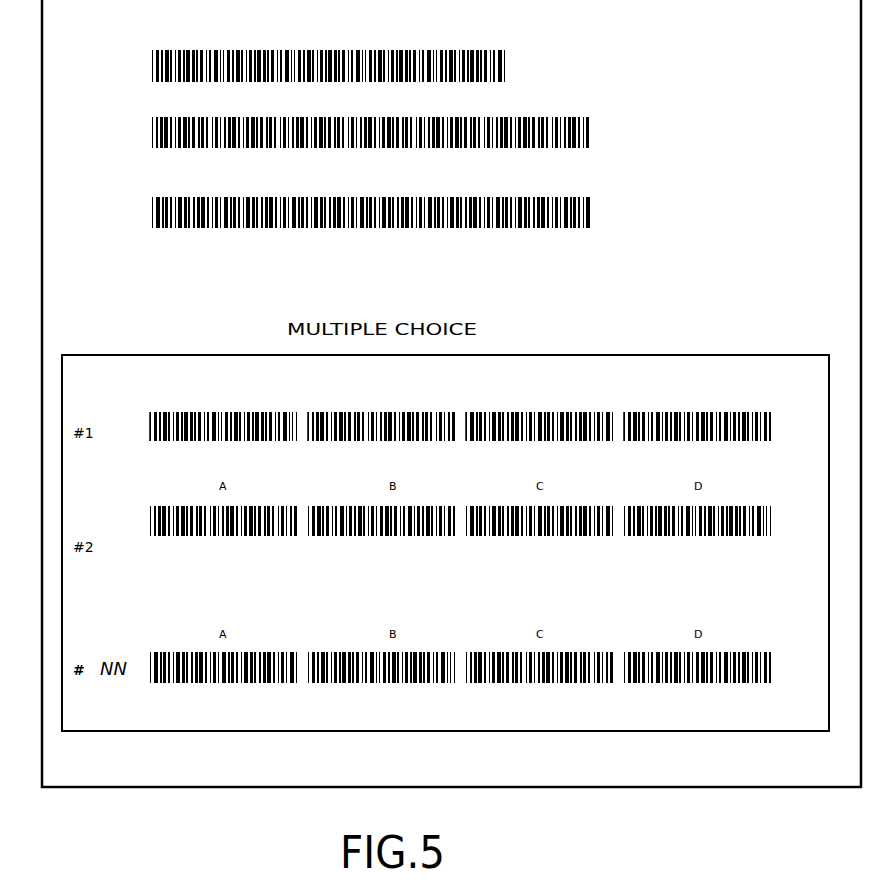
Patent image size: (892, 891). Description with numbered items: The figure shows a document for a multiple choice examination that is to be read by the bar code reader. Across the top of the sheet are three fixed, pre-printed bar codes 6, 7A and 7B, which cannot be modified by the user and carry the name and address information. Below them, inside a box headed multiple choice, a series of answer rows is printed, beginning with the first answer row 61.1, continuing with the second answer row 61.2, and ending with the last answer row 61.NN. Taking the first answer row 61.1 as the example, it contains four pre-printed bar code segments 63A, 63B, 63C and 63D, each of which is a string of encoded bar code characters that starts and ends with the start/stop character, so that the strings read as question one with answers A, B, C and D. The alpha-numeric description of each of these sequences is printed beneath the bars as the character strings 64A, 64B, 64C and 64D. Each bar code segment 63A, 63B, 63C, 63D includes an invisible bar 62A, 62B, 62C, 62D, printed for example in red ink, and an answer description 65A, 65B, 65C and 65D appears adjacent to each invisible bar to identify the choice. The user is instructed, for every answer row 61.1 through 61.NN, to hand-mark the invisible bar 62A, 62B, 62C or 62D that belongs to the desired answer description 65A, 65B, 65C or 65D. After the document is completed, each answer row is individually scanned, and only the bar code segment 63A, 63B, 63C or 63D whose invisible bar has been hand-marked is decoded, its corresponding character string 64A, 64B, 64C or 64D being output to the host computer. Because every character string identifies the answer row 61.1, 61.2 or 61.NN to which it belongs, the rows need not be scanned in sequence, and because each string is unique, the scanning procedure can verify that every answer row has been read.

The bar code 6 is at (151, 80).
The bar code 7A is at (151, 131).
The bar code 7B is at (151, 211).
The first answer row 61.1 is at (460, 428).
The answer row 61.2 is at (780, 521).
The last answer row 61.NN is at (780, 668).
The invisible bar 62A is at (234, 416).
The invisible bar 62B is at (393, 416).
The invisible bar 62C is at (546, 414).
The invisible bar 62D is at (707, 413).
The bar code segment 63A is at (167, 448).
The bar code segment 63B is at (334, 448).
The bar code segment 63C is at (492, 448).
The bar code segment 63D is at (649, 448).
The alpha-numeric description 64A is at (214, 449).
The alpha-numeric description 64B is at (380, 449).
The alpha-numeric description 64C is at (538, 449).
The alpha-numeric description 64D is at (683, 455).
The answer description 65A is at (218, 396).
The answer description 65B is at (386, 396).
The answer description 65C is at (534, 396).
The answer description 65D is at (691, 396).